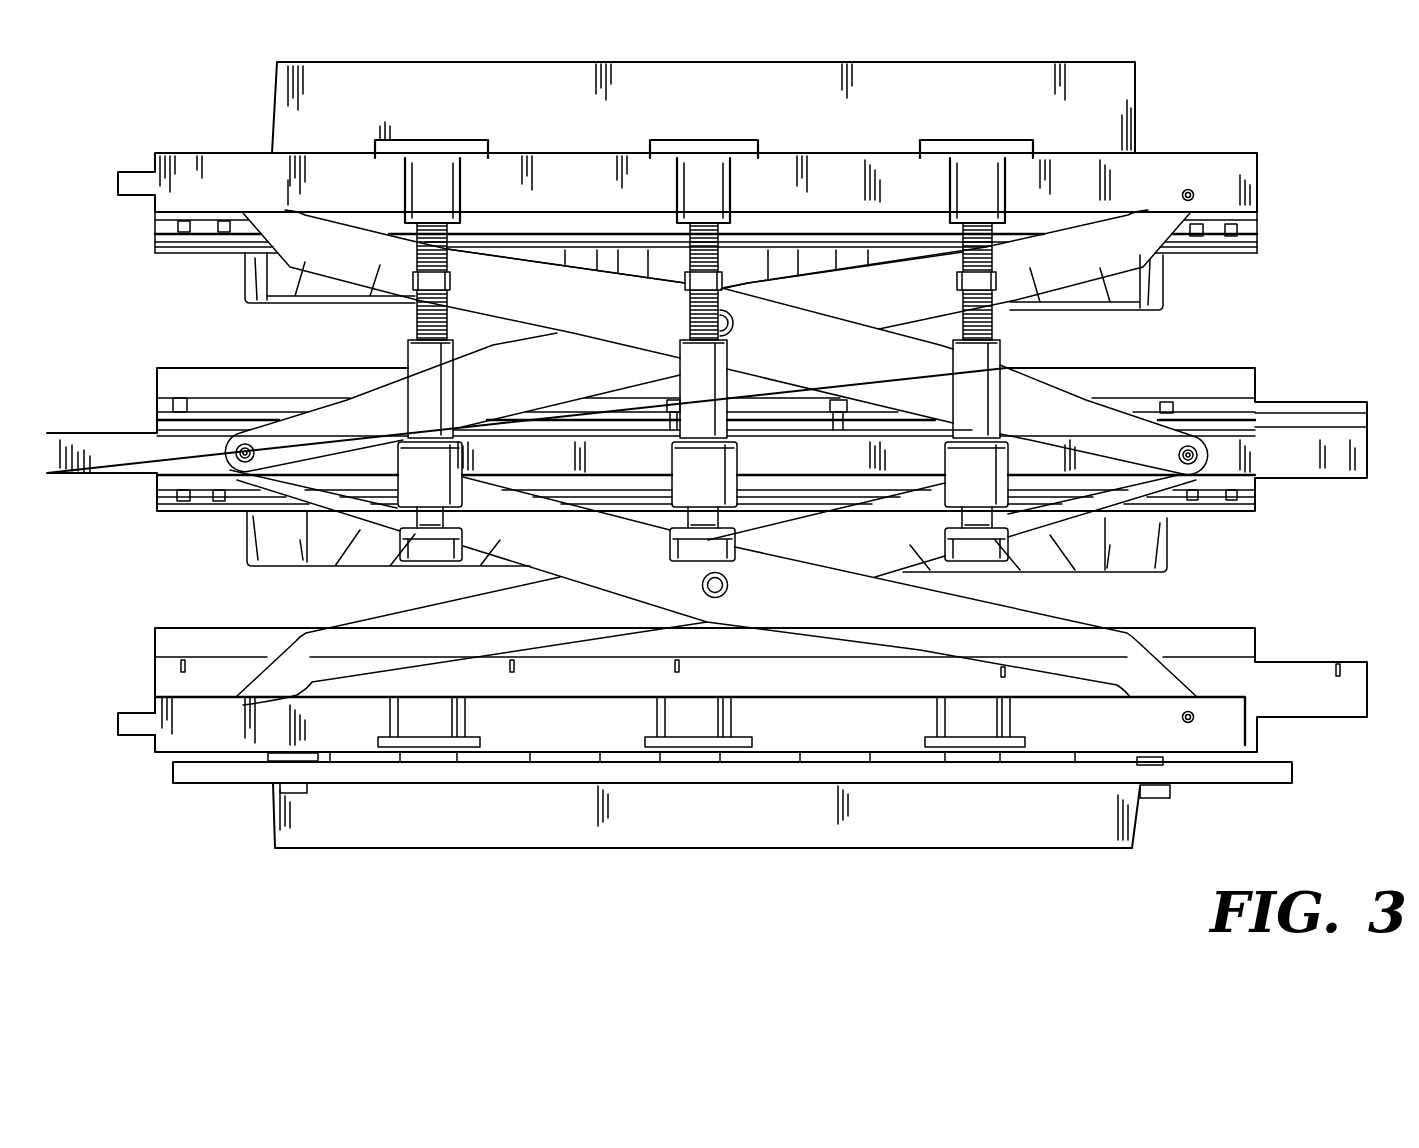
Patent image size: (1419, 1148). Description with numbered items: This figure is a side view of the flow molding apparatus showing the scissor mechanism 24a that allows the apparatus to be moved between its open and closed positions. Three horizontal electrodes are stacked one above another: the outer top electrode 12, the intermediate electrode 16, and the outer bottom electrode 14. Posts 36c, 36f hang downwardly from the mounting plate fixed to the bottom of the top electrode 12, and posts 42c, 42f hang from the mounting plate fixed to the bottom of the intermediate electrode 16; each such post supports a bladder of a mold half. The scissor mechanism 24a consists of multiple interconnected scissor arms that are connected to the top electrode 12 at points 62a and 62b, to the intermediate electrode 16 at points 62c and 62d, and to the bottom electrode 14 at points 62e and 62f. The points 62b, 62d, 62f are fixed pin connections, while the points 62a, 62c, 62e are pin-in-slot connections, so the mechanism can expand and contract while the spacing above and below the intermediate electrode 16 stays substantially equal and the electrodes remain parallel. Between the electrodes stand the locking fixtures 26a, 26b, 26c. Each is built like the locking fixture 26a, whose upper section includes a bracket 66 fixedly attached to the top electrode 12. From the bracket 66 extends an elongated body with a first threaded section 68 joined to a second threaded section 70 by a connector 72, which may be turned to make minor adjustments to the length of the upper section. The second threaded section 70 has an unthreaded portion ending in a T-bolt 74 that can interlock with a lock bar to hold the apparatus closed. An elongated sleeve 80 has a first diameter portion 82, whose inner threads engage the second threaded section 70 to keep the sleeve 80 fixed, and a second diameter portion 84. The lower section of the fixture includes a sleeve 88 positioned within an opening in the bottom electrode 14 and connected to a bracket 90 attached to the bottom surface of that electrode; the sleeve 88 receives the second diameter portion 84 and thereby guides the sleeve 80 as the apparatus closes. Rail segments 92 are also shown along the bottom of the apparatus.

The outer top electrode 12 is at (718, 175).
The outer bottom electrode 14 is at (742, 722).
The intermediate electrode 16 is at (1330, 457).
The scissor mechanism 24a is at (1087, 628).
The locking fixture 26a is at (434, 447).
The locking fixture 26b is at (722, 360).
The locking fixture 26c is at (996, 362).
The post 36c is at (268, 278).
The post 36f is at (1150, 290).
The post 42c is at (275, 566).
The post 42f is at (1150, 545).
The pin-in-slot connection point 62a is at (272, 190).
The fixed pin connection point 62b is at (1190, 190).
The pin-in-slot connection point 62c is at (243, 468).
The fixed pin connection point 62d is at (1188, 453).
The pin-in-slot connection point 62e is at (250, 725).
The fixed pin connection point 62f is at (1190, 712).
The bracket 66 is at (440, 168).
The first threaded section 68 is at (452, 245).
The second threaded section 70 is at (447, 327).
The connector 72 is at (448, 283).
The T-bolt 74 is at (458, 540).
The elongated sleeve 80 is at (462, 453).
The first diameter portion 82 is at (447, 390).
The second diameter portion 84 is at (458, 494).
The sleeve 88 is at (455, 716).
The bracket 90 is at (497, 768).
The base rail plate 92 is at (430, 768).